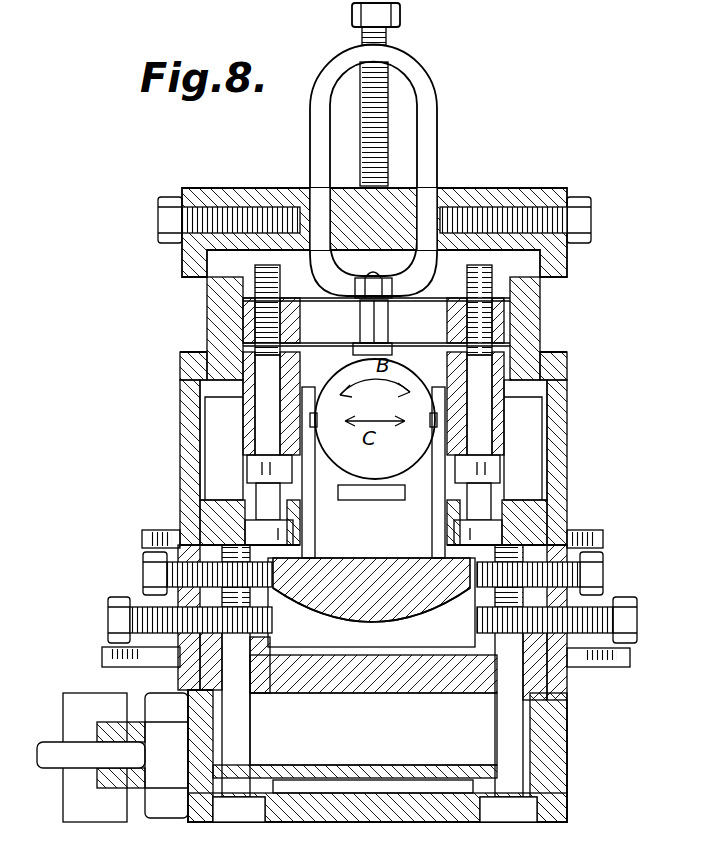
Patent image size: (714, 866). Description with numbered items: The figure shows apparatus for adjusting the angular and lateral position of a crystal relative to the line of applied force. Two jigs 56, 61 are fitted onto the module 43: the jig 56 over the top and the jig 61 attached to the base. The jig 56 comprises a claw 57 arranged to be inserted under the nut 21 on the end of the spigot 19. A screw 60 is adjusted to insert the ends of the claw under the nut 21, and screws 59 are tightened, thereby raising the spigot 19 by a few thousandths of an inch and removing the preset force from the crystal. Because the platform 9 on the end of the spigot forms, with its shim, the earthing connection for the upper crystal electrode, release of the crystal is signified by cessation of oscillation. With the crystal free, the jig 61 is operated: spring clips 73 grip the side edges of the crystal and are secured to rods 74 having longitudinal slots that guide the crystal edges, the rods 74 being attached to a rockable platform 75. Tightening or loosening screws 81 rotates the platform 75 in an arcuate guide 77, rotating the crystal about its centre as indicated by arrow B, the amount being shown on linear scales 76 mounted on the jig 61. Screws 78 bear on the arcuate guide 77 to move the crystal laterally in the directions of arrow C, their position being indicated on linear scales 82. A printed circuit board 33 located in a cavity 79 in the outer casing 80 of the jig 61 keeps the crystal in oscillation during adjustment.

The screw 60 is at (400, 12).
The claw 57 is at (438, 90).
The jig 56 is at (497, 186).
The screws 59 is at (603, 220).
The nut 21 is at (372, 270).
The spigot 19 is at (360, 326).
The platform 9 is at (395, 348).
The spring clips 73 is at (432, 424).
The rods 74 is at (310, 478).
The module 43 is at (577, 466).
The rockable platform 75 is at (348, 572).
The arcuate guide 77 is at (343, 566).
The jig 61 is at (578, 722).
The cavity 79 is at (452, 746).
The printed circuit board 33 is at (320, 765).
The outer casing 80 is at (560, 785).
The linear scales 76 is at (585, 532).
The screws 81 is at (618, 568).
The screws 78 is at (648, 626).
The linear scales 82 is at (600, 680).